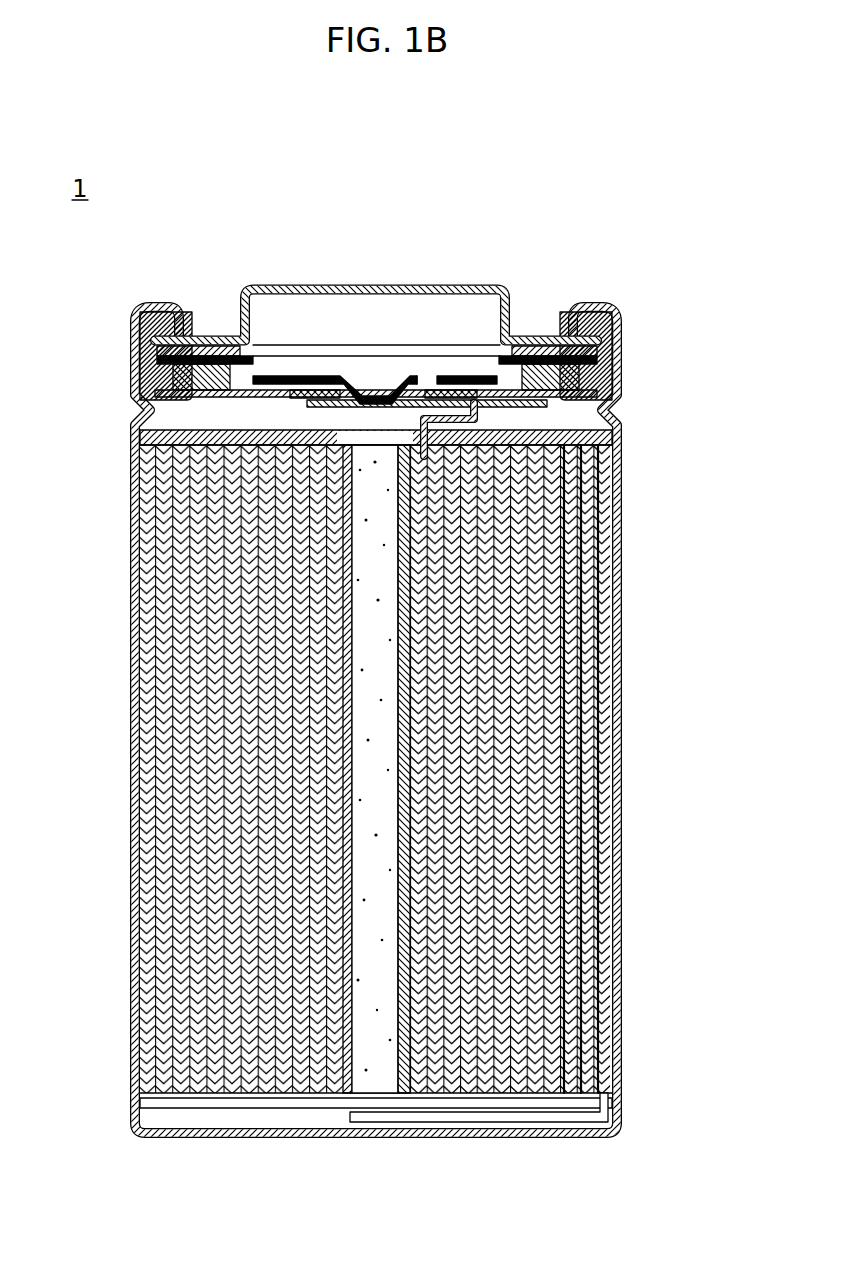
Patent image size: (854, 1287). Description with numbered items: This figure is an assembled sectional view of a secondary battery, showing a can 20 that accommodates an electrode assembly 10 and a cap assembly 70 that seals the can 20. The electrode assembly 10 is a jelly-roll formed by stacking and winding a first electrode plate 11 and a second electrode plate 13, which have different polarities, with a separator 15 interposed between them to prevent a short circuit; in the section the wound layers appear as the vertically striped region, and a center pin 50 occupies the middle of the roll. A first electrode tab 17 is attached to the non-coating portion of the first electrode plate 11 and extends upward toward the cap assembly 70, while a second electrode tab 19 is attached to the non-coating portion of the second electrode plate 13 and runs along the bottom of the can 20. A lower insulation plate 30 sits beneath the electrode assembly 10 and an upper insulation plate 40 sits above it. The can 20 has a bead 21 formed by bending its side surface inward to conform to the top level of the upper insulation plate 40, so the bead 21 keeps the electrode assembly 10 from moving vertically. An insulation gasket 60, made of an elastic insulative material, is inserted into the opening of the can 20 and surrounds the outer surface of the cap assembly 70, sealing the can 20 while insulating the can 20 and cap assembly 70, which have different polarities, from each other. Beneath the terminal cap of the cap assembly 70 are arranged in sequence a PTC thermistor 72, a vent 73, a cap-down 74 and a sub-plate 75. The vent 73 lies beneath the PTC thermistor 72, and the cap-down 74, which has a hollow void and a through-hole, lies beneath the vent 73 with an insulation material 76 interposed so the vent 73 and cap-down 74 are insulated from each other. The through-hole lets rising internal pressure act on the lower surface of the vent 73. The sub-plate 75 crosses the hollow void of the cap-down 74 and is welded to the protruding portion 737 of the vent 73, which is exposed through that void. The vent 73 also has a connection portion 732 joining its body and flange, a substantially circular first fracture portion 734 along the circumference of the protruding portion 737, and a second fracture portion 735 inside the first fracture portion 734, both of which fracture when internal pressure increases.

The electrode assembly 10 is at (705, 397).
The first electrode plate 11 is at (573, 608).
The second electrode plate 13 is at (590, 540).
The separator 15 is at (606, 498).
The first electrode tab 17 is at (478, 412).
The second electrode tab 19 is at (537, 1128).
The can 20 is at (331, 720).
The bead 21 is at (142, 410).
The lower insulation plate 30 is at (258, 1100).
The upper insulation plate 40 is at (142, 436).
The center pin 50 is at (358, 600).
The insulation gasket 60 is at (605, 342).
The cap assembly 70 is at (376, 289).
The positive temperature coefficient (PTC) thermistor 72 is at (540, 333).
The vent 73 is at (190, 334).
The connection portion 732 is at (272, 372).
The first fracture portion 734 is at (510, 336).
The second fracture portion 735 is at (417, 362).
The protruding portion 737 is at (373, 390).
The cap-down 74 is at (383, 309).
The sub-plate 75 is at (472, 362).
The insulation material 76 is at (213, 334).